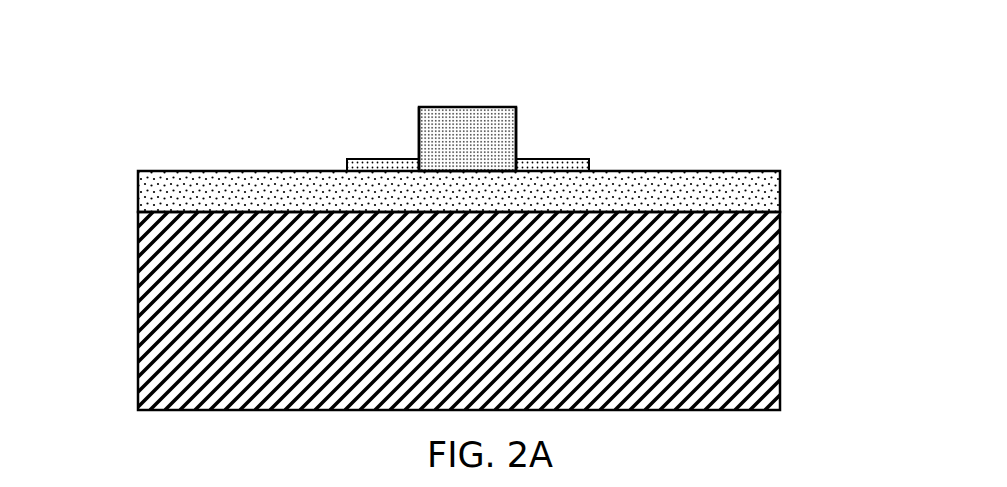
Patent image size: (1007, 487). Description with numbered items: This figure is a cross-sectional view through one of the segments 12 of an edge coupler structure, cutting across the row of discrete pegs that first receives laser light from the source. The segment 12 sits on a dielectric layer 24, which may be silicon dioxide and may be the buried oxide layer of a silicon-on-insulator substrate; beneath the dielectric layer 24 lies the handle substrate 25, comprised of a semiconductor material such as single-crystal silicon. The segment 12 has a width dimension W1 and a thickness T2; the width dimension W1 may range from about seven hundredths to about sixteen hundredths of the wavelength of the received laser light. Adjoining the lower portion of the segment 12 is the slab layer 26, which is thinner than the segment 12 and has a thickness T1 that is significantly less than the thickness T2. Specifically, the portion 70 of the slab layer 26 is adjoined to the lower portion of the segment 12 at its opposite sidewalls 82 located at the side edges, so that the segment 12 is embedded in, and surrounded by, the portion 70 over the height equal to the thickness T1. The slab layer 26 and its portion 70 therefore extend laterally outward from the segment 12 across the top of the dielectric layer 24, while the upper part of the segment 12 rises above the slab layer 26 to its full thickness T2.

The segment 12 is at (493, 130).
The dielectric layer 24 is at (737, 192).
The handle substrate 25 is at (168, 328).
The slab layer 26 is at (630, 156).
The portion of the slab layer 70 is at (365, 162).
The sidewall 82 is at (418, 133).
The width dimension W1 is at (515, 45).
The thickness T1 is at (107, 215).
The thickness T2 is at (21, 108).